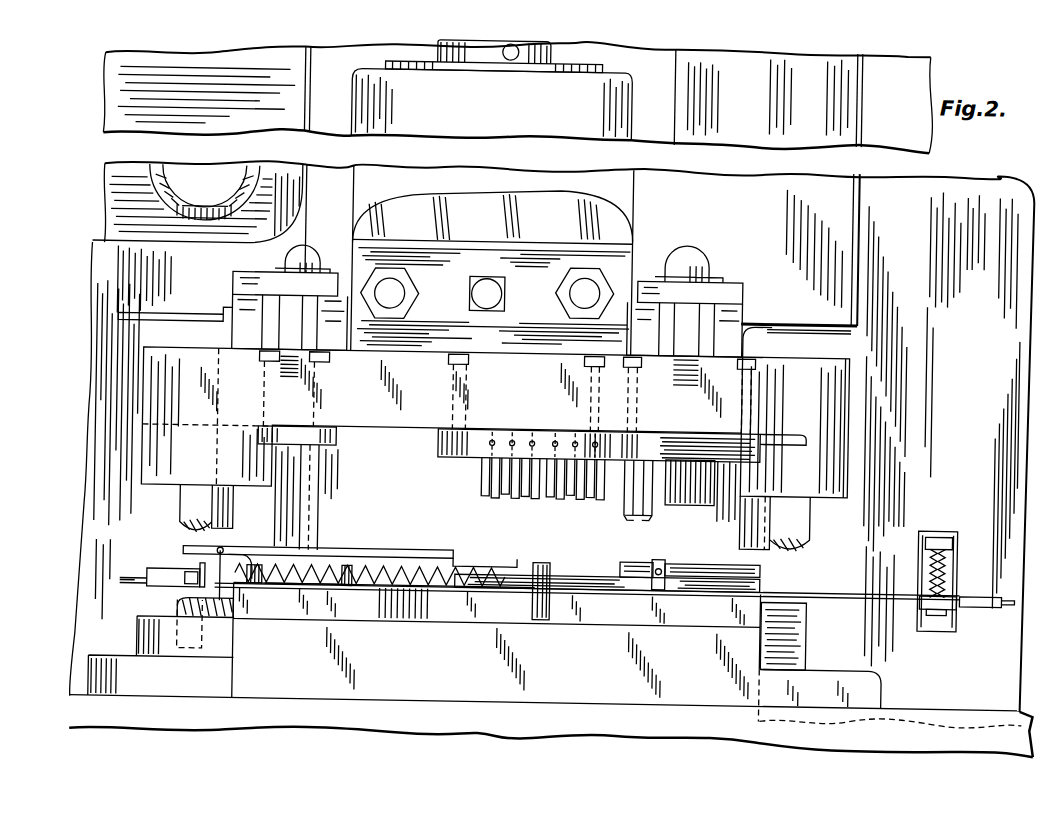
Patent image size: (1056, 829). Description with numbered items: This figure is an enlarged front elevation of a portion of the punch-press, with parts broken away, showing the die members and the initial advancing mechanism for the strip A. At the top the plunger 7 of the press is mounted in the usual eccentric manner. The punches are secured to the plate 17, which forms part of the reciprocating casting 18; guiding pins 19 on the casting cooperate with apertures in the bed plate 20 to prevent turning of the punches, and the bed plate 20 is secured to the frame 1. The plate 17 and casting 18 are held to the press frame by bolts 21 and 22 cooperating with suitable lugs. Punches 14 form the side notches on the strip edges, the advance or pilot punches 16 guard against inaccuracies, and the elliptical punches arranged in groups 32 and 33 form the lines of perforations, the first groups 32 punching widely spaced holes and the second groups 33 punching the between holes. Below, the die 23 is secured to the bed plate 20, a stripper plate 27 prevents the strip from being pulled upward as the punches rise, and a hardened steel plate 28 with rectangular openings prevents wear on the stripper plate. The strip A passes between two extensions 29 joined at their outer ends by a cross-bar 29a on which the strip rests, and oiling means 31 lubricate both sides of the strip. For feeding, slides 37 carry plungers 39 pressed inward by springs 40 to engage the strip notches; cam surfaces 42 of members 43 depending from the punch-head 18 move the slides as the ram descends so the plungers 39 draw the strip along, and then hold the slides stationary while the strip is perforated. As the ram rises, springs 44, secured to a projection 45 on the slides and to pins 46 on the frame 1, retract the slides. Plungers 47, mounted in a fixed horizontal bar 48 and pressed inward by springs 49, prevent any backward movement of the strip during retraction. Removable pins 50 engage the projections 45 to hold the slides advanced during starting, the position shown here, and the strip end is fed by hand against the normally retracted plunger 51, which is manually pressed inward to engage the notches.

The plunger 7 is at (545, 44).
The bolts 21 is at (305, 265).
The bolts 22 is at (416, 300).
The casting 18 is at (367, 429).
The plate 17 is at (440, 449).
The members 43 is at (313, 508).
The guiding pins 19 is at (181, 518).
The cam surfaces 42 is at (305, 565).
The slides 37 is at (360, 567).
The second groups of elliptical punches 33 is at (493, 500).
The first groups of elliptical punches 32 is at (552, 500).
The pilot punches 16 is at (631, 519).
The punches 14 is at (692, 502).
The hardened steel plate 28 is at (692, 562).
The projection 45 is at (219, 575).
The fixed horizontal bar 48 is at (162, 572).
The strip A is at (122, 587).
The springs 49 is at (194, 605).
The plungers 47 is at (161, 647).
The pins 50 is at (257, 587).
The springs 40 is at (290, 587).
The plungers 39 is at (348, 585).
The springs 44 is at (422, 589).
The pins 46 is at (541, 604).
The stripper plate 27 is at (594, 578).
The die 23 is at (625, 620).
The plunger 51 is at (670, 582).
The extensions 29 is at (838, 588).
The cross-bar 29a is at (971, 599).
The oiling means 31 is at (905, 640).
The bed plate 20 is at (491, 688).
The frame 1 is at (355, 725).